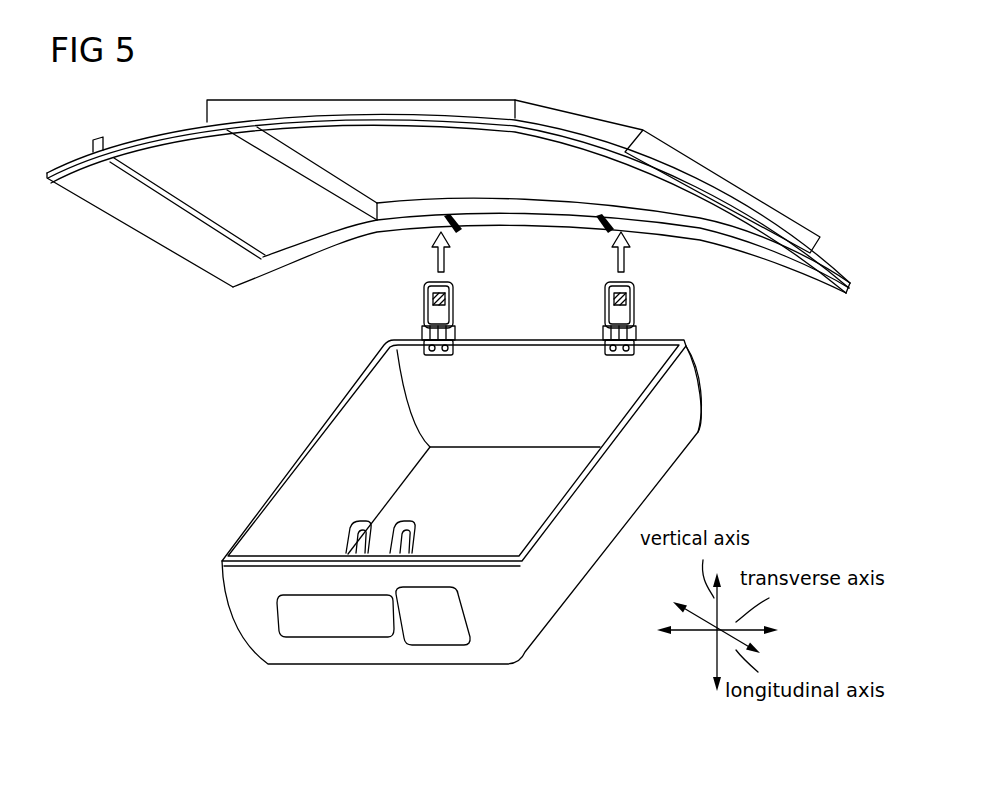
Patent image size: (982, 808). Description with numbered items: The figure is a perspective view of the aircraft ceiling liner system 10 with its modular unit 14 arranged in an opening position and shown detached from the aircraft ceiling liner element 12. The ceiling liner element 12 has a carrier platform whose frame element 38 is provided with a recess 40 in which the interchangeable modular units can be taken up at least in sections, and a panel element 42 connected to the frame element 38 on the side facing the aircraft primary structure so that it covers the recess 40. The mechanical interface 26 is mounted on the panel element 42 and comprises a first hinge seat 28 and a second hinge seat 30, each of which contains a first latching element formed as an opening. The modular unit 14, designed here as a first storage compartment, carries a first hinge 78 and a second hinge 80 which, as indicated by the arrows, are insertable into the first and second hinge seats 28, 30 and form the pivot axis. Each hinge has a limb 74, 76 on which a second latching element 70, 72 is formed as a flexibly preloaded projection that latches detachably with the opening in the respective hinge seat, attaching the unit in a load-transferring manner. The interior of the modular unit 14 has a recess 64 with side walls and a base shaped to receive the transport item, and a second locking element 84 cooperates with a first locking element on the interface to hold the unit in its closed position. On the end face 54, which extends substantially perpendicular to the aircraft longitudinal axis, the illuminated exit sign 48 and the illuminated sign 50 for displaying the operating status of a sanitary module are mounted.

The aircraft ceiling liner system 10 is at (818, 353).
The aircraft ceiling liner element 12 is at (836, 305).
The modular unit 14 is at (735, 405).
The mechanical interface 26 is at (557, 287).
The first hinge seat 28 is at (457, 232).
The second hinge seat 30 is at (604, 230).
The frame element 38 is at (178, 122).
The recess 40 is at (230, 217).
The panel element 42 is at (500, 108).
The illuminated exit sign 48 is at (330, 622).
The illuminated sign for displaying an operating status of a sanitary module 50 is at (428, 632).
The end face 54 is at (500, 637).
The recess 64 is at (525, 512).
The second latching element 70 is at (423, 290).
The second latching element 72 is at (635, 290).
The limb 74 is at (423, 303).
The limb 76 is at (635, 318).
The first hinge 78 is at (458, 357).
The second hinge 80 is at (596, 357).
The second locking element 84 is at (352, 515).